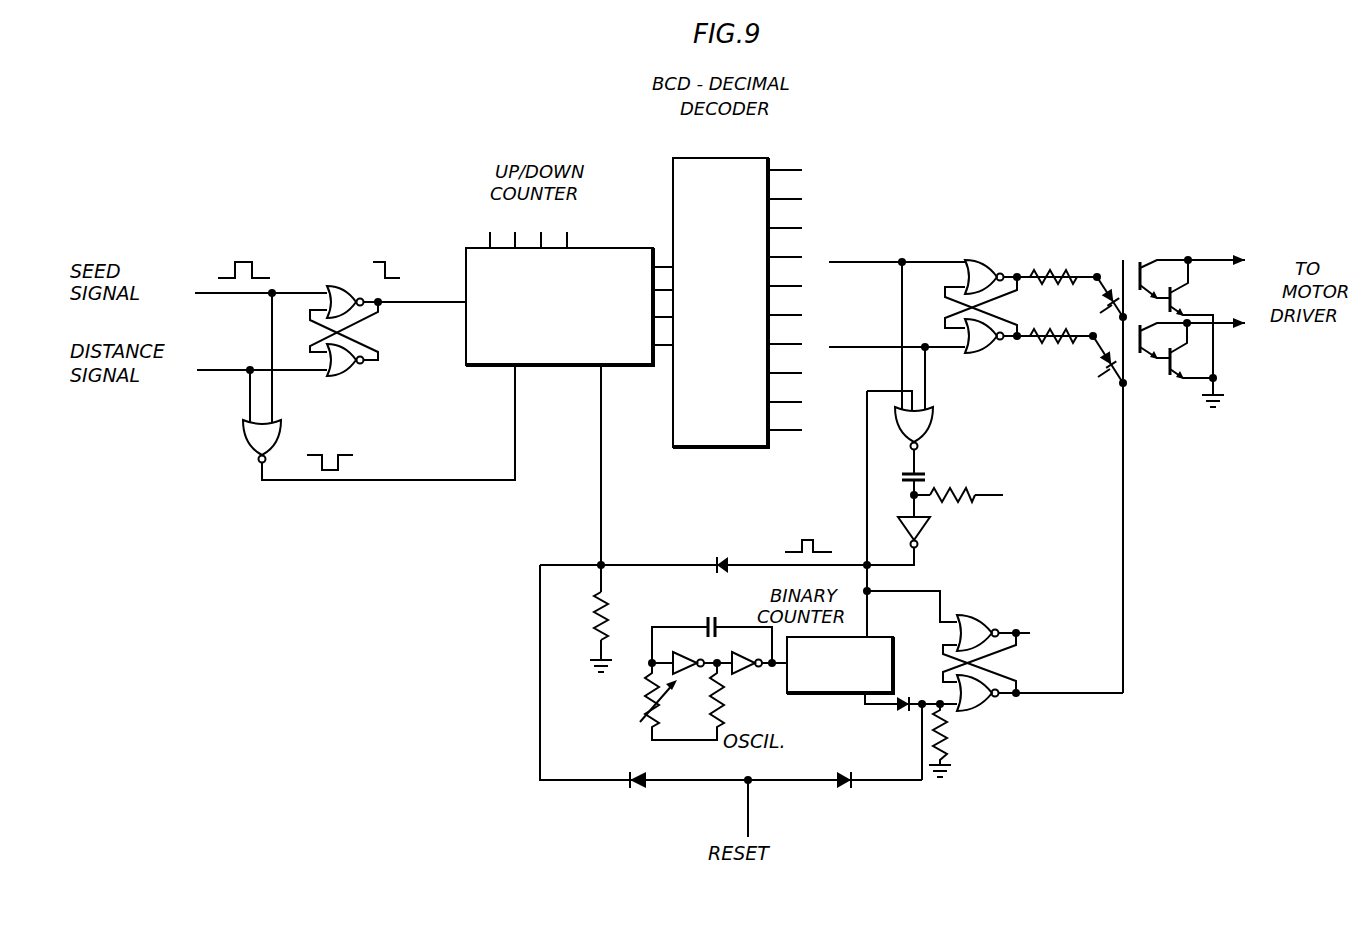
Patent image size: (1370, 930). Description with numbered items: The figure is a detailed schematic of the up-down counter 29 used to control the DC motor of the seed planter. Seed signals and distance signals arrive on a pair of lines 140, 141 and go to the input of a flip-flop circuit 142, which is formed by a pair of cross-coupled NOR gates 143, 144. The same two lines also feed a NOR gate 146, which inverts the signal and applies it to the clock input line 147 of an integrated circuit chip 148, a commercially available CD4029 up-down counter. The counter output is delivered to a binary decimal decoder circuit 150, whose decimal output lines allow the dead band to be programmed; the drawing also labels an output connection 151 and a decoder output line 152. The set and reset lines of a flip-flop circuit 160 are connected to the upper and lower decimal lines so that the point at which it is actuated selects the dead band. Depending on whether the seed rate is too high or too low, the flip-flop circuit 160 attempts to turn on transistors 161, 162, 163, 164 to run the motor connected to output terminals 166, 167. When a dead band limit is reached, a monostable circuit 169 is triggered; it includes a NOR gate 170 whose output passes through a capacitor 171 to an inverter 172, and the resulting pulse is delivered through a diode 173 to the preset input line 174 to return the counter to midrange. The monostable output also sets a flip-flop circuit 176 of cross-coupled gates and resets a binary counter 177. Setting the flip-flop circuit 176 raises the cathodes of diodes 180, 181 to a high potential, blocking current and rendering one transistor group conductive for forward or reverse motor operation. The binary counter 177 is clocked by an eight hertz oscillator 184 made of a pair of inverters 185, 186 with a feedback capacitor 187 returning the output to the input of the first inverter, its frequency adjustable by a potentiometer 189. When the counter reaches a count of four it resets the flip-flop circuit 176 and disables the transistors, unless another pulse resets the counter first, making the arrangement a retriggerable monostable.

The up-down counter 29 is at (505, 648).
The line 140 is at (205, 296).
The line 141 is at (205, 368).
The flip-flop circuit 142 is at (338, 278).
The NOR gate 143 is at (384, 316).
The NOR gate 144 is at (356, 372).
The NOR gate 146 is at (276, 438).
The clock input line 147 is at (425, 478).
The integrated circuit chip 148 is at (627, 252).
The binary decimal decoder circuit 150 is at (748, 158).
The counter output lines 151 is at (667, 348).
The decoder output line 152 is at (788, 432).
The flip-flop circuit 160 is at (990, 258).
The transistor 161 is at (1152, 262).
The transistor 162 is at (1163, 295).
The transistor 163 is at (1148, 352).
The transistor 164 is at (1176, 382).
The output terminal 166 is at (1237, 257).
The output terminal 167 is at (1240, 328).
The monostable circuit 169 is at (925, 446).
The NOR gate 170 is at (930, 413).
The capacitor 171 is at (916, 474).
The inverter 172 is at (925, 523).
The diode 173 is at (722, 558).
The preset input line 174 is at (600, 413).
The flip-flop circuit 176 is at (981, 611).
The binary counter 177 is at (862, 697).
The diode 180 is at (1099, 312).
The diode 181 is at (1100, 377).
The oscillator 184 is at (671, 665).
The inverter 185 is at (680, 650).
The inverter 186 is at (742, 678).
The feedback capacitor 187 is at (716, 618).
The potentiometer 189 is at (640, 722).